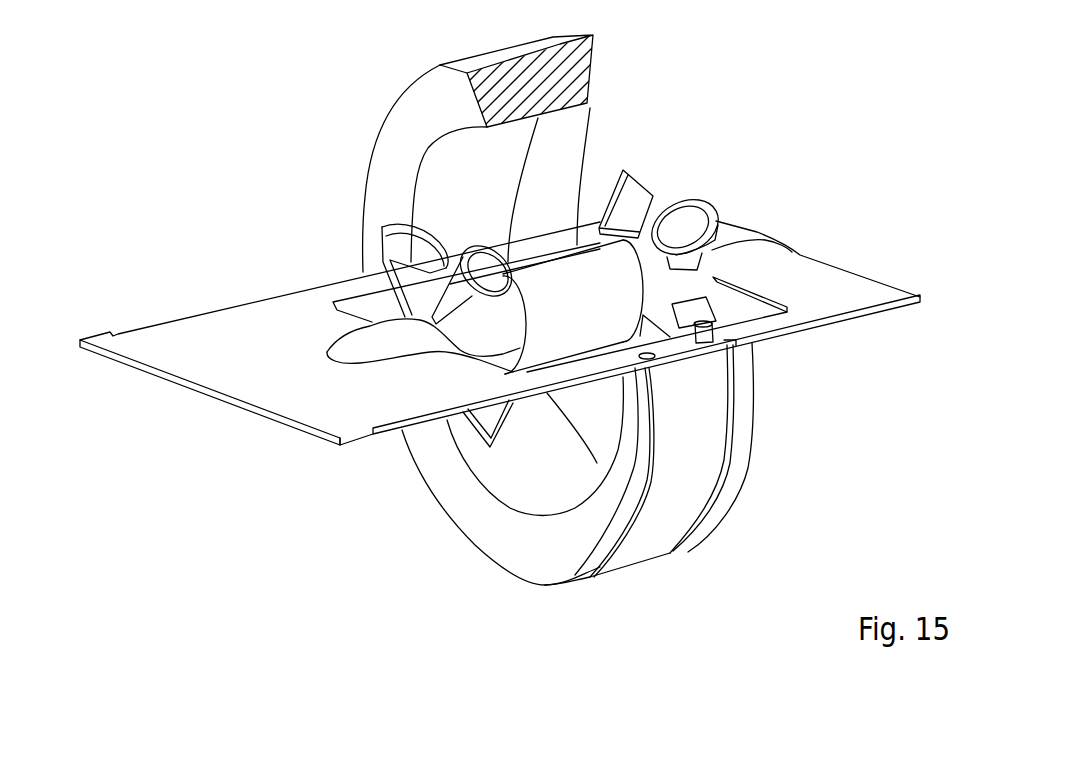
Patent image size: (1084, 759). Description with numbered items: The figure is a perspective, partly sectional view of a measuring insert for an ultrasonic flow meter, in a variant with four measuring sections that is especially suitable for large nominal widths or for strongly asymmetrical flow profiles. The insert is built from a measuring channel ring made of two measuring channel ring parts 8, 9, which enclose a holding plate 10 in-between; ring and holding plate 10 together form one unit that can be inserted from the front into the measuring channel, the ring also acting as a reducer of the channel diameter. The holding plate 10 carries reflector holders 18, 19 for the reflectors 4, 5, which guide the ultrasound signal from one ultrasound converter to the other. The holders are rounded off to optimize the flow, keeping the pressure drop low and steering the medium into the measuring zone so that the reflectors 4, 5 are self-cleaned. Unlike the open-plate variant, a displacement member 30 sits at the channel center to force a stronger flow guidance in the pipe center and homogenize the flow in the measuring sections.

The reflector 4 is at (492, 265).
The reflector 5 is at (690, 218).
The measuring channel ring part 8 is at (404, 103).
The measuring channel ring part 9 is at (482, 537).
The holding plate 10 is at (818, 262).
The reflector holder 18 is at (410, 327).
The reflector holder 19 is at (735, 255).
The displacement member 30 is at (580, 272).